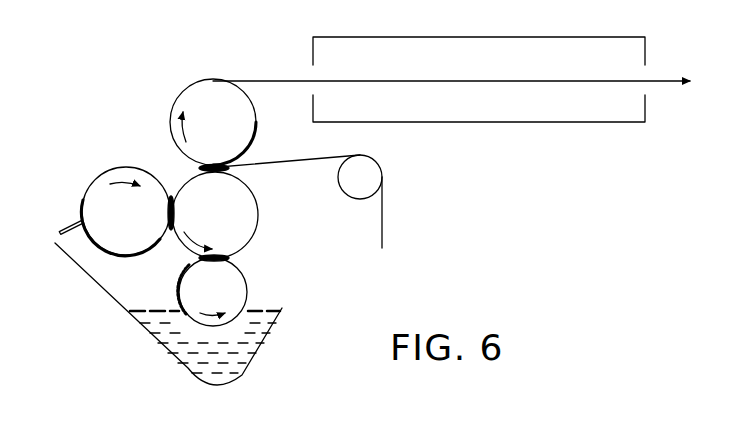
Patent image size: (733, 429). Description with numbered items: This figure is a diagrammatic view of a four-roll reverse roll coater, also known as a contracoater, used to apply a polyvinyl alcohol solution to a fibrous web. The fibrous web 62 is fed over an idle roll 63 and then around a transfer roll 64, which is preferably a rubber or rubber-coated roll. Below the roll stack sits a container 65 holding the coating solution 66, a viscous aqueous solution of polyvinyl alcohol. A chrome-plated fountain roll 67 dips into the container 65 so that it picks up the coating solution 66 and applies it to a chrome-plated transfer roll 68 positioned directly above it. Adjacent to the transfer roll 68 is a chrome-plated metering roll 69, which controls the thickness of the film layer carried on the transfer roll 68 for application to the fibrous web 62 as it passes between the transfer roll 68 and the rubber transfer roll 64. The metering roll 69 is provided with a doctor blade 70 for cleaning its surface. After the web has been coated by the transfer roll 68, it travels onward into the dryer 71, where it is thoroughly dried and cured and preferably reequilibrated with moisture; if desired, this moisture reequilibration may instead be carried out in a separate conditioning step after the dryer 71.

The fibrous web 62 is at (384, 212).
The idle roll 63 is at (365, 200).
The transfer roll 64 is at (252, 138).
The container 65 is at (250, 362).
The coating solution 66 is at (283, 308).
The fountain roll 67 is at (245, 292).
The transfer roll 68 is at (246, 232).
The metering roll 69 is at (83, 200).
The doctor blade 70 is at (59, 232).
The dryer 71 is at (468, 122).